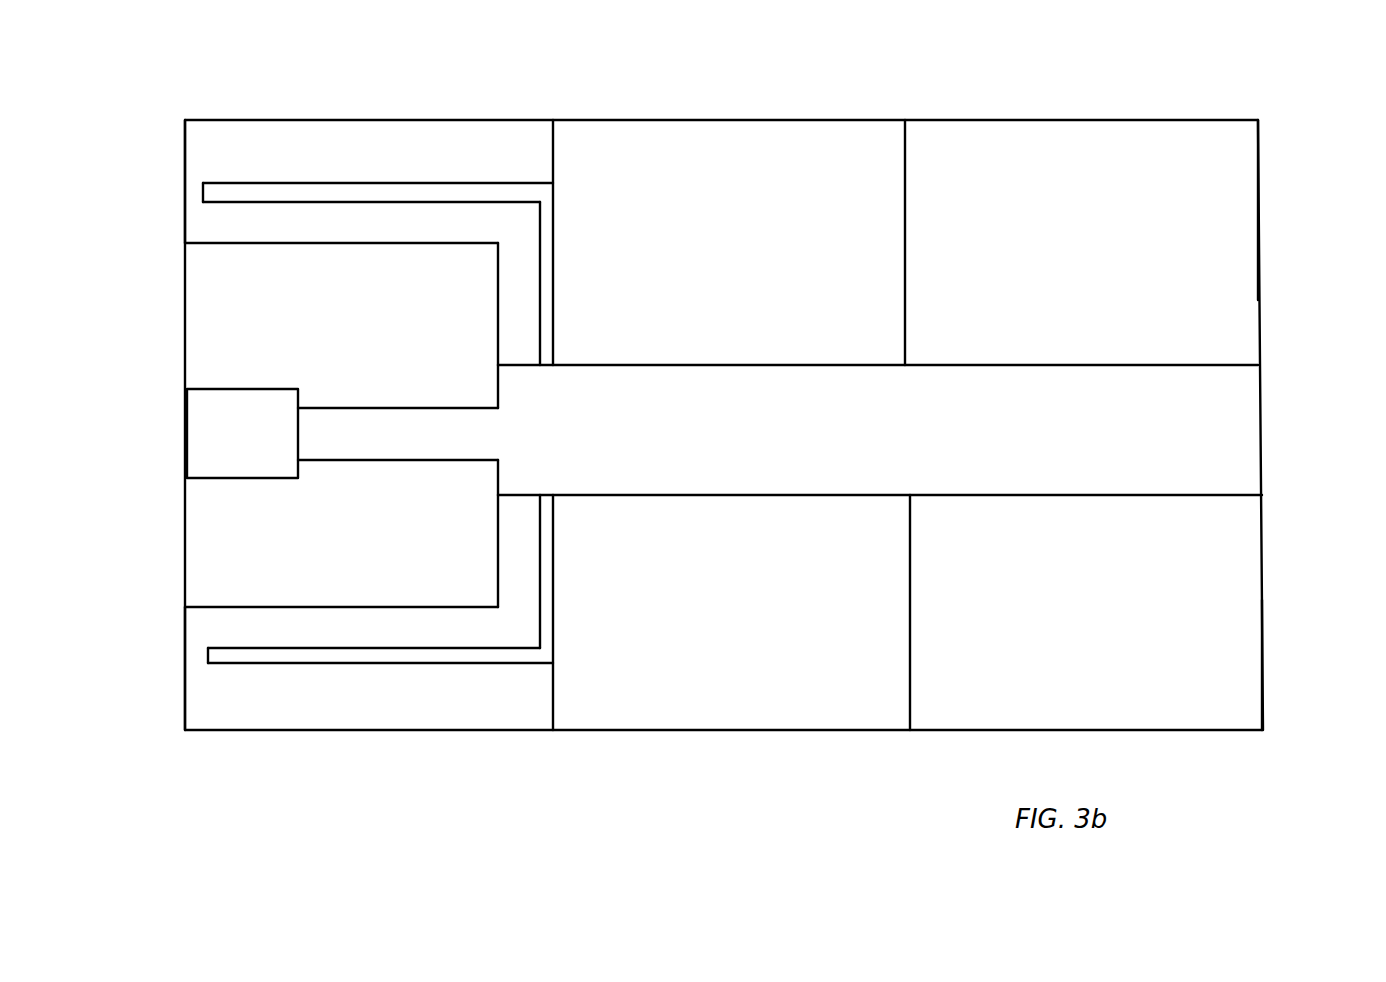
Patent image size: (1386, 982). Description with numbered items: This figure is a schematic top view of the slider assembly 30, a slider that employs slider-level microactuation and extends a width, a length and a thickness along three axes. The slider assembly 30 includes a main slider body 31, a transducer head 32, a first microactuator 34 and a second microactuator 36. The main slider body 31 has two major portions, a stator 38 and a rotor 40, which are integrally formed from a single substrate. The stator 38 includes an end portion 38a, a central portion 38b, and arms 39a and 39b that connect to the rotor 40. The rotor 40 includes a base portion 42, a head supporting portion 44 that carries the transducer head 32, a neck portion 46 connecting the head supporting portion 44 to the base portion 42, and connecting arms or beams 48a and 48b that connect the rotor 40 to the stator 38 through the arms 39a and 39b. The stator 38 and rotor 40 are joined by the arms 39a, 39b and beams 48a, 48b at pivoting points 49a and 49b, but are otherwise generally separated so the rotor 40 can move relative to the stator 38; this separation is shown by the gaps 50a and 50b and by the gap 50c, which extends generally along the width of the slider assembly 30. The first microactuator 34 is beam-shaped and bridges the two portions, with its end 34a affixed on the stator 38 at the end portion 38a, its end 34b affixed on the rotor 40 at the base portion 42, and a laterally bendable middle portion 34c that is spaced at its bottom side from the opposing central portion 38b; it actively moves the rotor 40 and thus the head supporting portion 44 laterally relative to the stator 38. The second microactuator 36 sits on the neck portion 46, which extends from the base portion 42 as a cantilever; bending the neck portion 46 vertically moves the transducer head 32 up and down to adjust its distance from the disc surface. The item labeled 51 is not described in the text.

The slider assembly 30 is at (1283, 224).
The main slider body 31 is at (165, 678).
The transducer head 32 is at (185, 447).
The first microactuator 34 is at (968, 425).
The end of first microactuator 34a is at (1220, 415).
The end of first microactuator 34b is at (533, 418).
The middle portion of first microactuator 34c is at (720, 443).
The second microactuator 36 is at (325, 440).
The stator 38 is at (840, 97).
The end portion of stator 38a is at (1213, 303).
The central portion of stator 38b is at (885, 157).
The arm of stator 39a is at (232, 130).
The arm of stator 39b is at (222, 702).
The rotor 40 is at (510, 210).
The base portion of rotor 42 is at (497, 345).
The head supporting portion 44 is at (200, 413).
The neck portion 46 is at (340, 408).
The connecting arm 48a is at (218, 243).
The connecting arm 48b is at (225, 620).
The pivoting point 49a is at (185, 193).
The pivoting point 49b is at (185, 655).
The gap 50a is at (385, 195).
The gap 50b is at (375, 655).
The gap 50c is at (548, 278).
The lower wall segment 51 is at (625, 563).